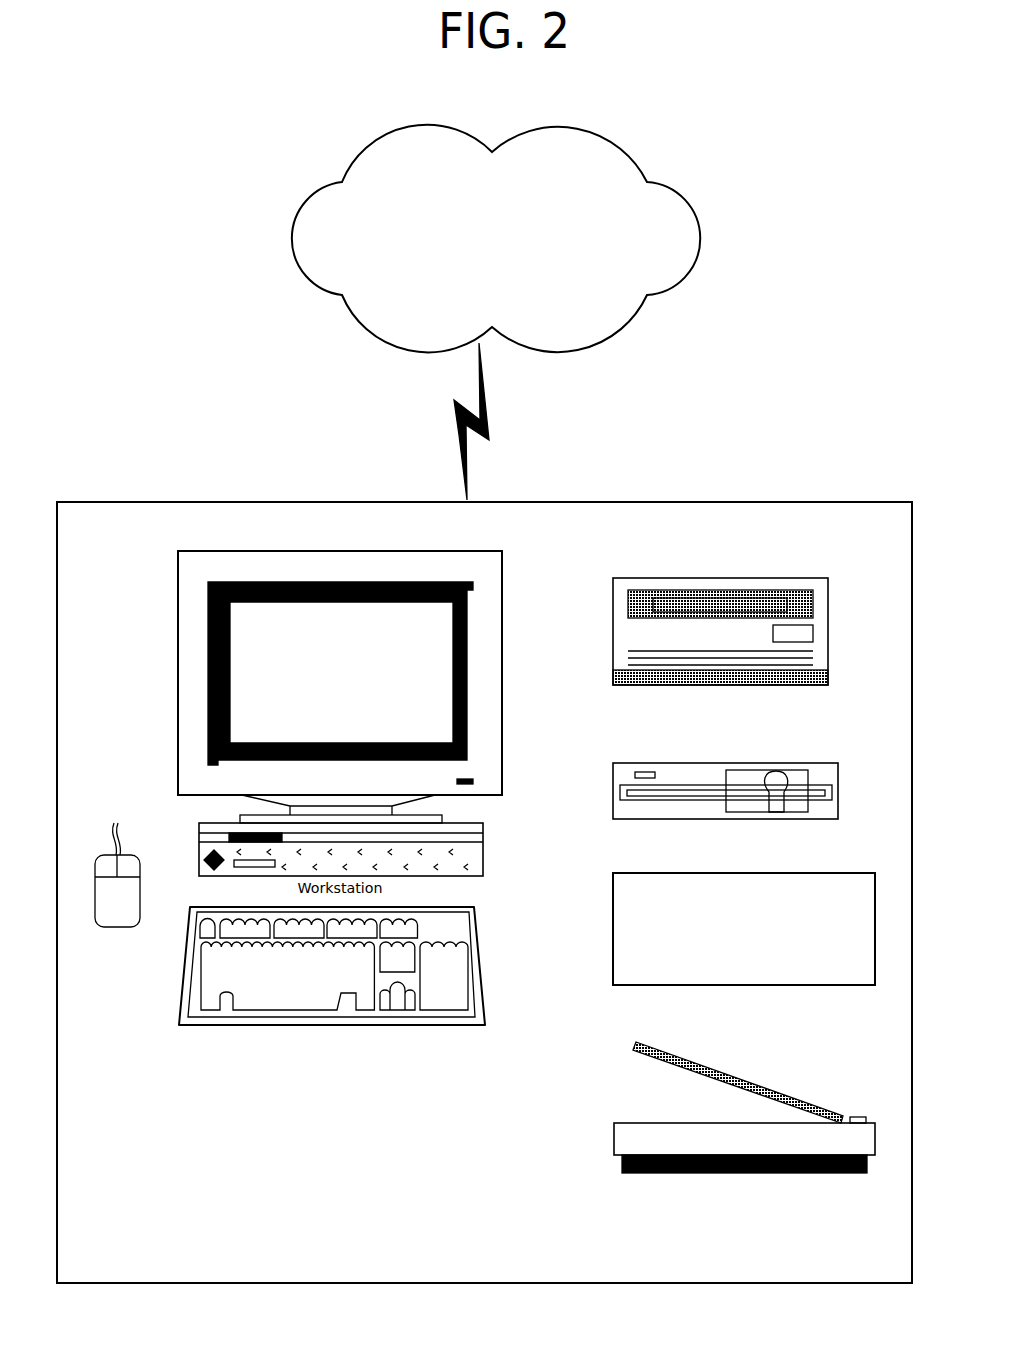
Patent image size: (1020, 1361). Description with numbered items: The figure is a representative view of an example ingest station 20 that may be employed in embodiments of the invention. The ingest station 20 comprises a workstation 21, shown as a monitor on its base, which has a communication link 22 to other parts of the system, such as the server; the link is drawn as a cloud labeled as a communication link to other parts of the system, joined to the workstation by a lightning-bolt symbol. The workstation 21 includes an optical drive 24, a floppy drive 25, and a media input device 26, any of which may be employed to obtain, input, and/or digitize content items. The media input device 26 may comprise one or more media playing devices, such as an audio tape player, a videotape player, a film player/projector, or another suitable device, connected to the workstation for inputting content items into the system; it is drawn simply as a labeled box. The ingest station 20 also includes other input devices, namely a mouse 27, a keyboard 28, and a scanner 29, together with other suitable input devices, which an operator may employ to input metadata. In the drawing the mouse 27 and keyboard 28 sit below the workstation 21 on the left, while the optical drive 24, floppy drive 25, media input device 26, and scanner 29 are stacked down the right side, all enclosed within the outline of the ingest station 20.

The ingest station 20 is at (247, 503).
The workstation 21 is at (178, 701).
The communication link 22 is at (633, 312).
The optical drive 24 is at (613, 656).
The floppy drive 25 is at (613, 797).
The media input device 26 is at (613, 943).
The mouse 27 is at (138, 915).
The keyboard 28 is at (285, 1025).
The scanner 29 is at (613, 1152).